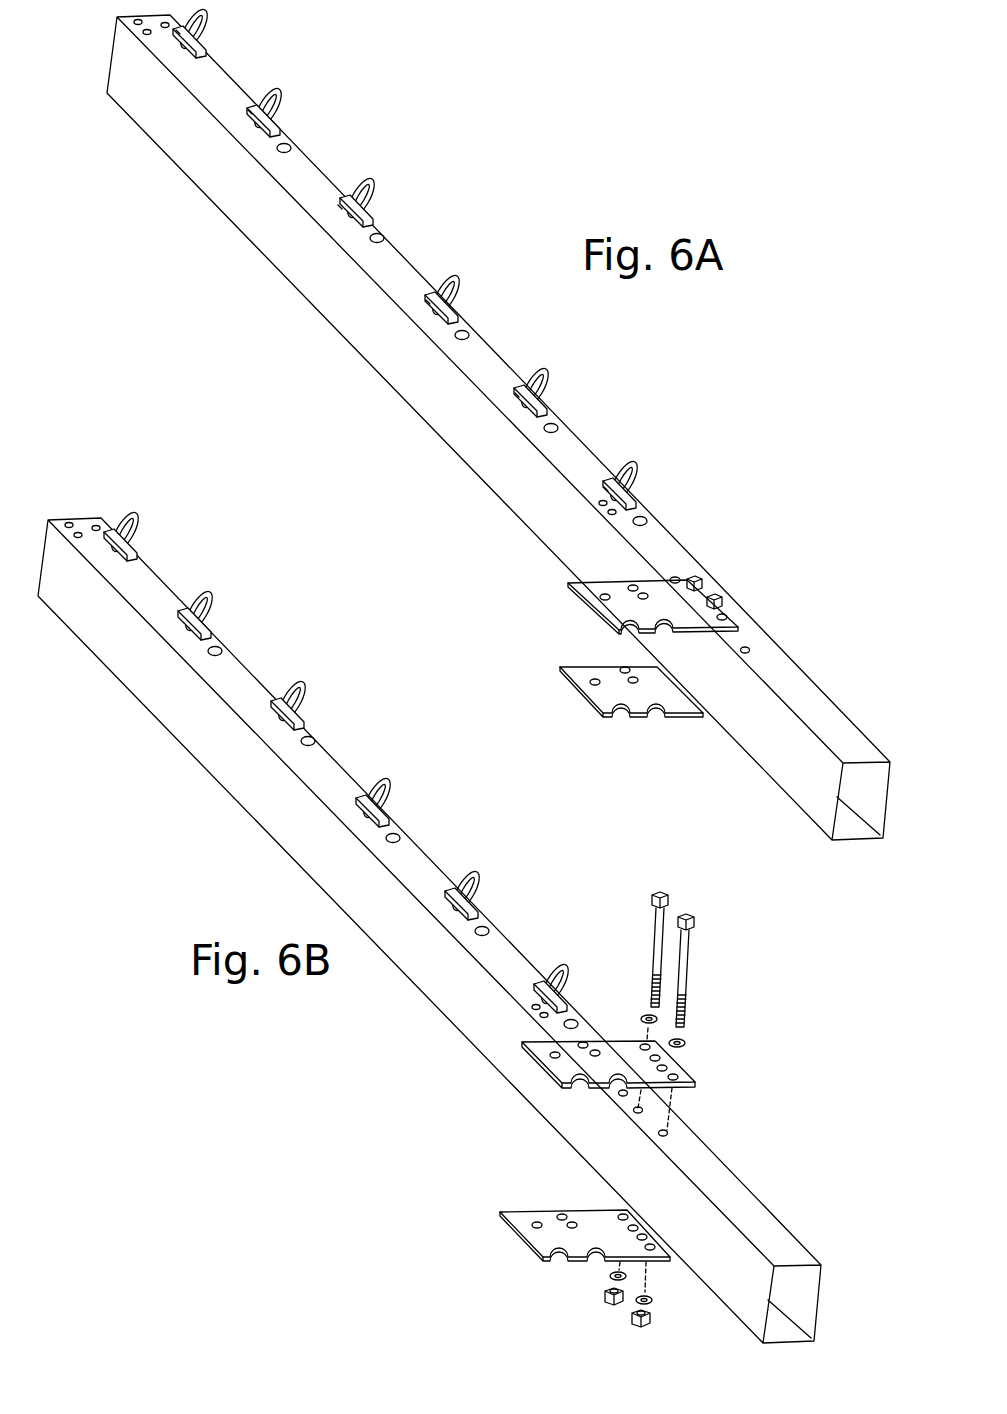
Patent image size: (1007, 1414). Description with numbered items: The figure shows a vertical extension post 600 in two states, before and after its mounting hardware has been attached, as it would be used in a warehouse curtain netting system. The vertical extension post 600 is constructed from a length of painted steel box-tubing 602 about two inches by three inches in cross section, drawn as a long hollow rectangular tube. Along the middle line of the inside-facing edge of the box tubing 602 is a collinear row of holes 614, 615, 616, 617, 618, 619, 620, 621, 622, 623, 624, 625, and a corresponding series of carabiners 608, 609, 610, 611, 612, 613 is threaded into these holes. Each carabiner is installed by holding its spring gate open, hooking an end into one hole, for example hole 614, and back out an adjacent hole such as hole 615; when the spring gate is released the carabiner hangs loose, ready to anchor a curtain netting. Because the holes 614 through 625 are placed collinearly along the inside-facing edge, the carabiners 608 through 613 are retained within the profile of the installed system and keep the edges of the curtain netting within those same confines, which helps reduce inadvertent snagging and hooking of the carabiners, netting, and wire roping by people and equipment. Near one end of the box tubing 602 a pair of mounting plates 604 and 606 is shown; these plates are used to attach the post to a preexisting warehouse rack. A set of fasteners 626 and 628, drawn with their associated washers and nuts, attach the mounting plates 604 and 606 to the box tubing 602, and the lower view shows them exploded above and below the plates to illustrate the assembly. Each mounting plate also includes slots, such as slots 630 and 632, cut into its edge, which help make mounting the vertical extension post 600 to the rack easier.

In FIG. 6A, the vertical extension post 600 is at (737, 392).
In FIG. 6B, the vertical extension post 600 is at (345, 716).
In FIG. 6A, the box-tubing 602 is at (422, 394).
In FIG. 6B, the box-tubing 602 is at (205, 739).
In FIG. 6A, the mounting plate 604 is at (580, 597).
In FIG. 6B, the mounting plate 604 is at (520, 1048).
In FIG. 6A, the mounting plate 606 is at (577, 694).
In FIG. 6B, the mounting plate 606 is at (502, 1217).
In FIG. 6A, the carabiner 608 is at (207, 22).
In FIG. 6A, the carabiner 609 is at (282, 101).
In FIG. 6A, the carabiner 610 is at (374, 192).
In FIG. 6A, the carabiner 611 is at (460, 286).
In FIG. 6A, the carabiner 612 is at (549, 379).
In FIG. 6A, the carabiner 613 is at (638, 472).
In FIG. 6A, the hole 614 is at (208, 56).
In FIG. 6A, the hole 615 is at (178, 33).
In FIG. 6A, the hole 616 is at (284, 131).
In FIG. 6A, the hole 617 is at (250, 113).
In FIG. 6A, the hole 618 is at (375, 224).
In FIG. 6A, the hole 619 is at (340, 207).
In FIG. 6A, the hole 620 is at (463, 318).
In FIG. 6A, the hole 621 is at (428, 302).
In FIG. 6A, the hole 622 is at (553, 409).
In FIG. 6A, the hole 623 is at (517, 395).
In FIG. 6A, the hole 624 is at (606, 489).
In FIG. 6A, the hole 625 is at (641, 503).
In FIG. 6B, the fastener 626 is at (652, 938).
In FIG. 6B, the fastener 628 is at (688, 955).
In FIG. 6B, the slot 630 is at (572, 1087).
In FIG. 6B, the slot 632 is at (560, 1259).